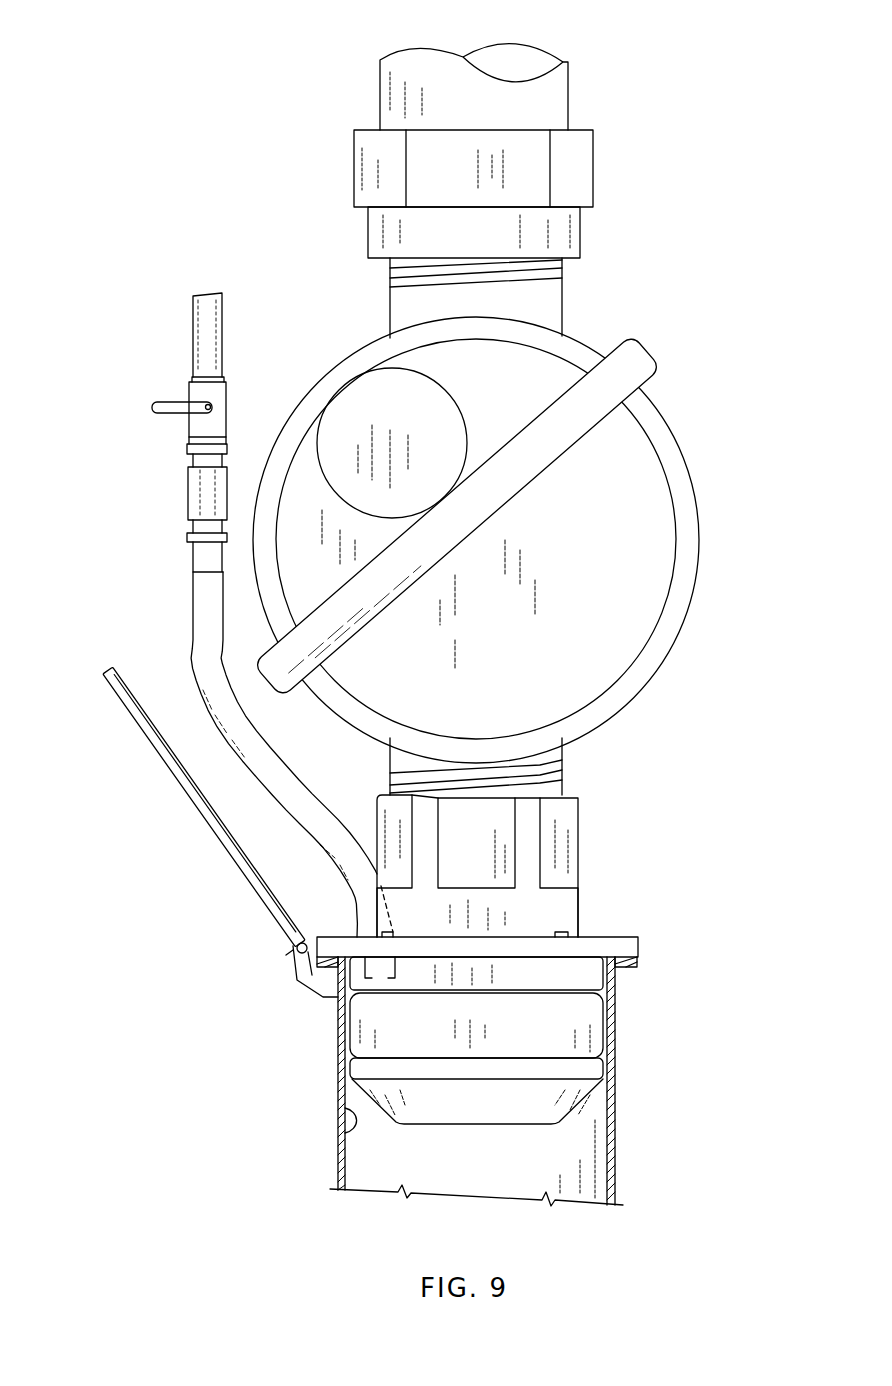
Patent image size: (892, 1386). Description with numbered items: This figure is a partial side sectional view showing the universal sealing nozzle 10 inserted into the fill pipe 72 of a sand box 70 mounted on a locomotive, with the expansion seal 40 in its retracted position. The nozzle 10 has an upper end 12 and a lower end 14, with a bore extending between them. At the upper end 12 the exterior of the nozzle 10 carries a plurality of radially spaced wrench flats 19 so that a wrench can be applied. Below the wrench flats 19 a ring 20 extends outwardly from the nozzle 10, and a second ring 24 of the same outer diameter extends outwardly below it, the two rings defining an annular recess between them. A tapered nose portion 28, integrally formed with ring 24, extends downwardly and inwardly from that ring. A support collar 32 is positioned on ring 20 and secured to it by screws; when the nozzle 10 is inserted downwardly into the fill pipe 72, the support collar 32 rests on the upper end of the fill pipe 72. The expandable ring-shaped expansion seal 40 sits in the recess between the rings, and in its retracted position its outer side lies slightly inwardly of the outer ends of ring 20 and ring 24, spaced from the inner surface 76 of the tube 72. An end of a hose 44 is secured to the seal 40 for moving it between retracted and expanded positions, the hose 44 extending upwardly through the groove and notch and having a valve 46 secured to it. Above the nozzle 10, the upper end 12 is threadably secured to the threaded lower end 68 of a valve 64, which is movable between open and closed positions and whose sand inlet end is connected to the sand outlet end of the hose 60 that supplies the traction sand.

The nozzle 10 is at (622, 887).
The upper end 12 is at (570, 783).
The lower end 14 is at (533, 1137).
The wrench flats 19 is at (567, 828).
The ring 20 is at (585, 975).
The ring 24 is at (585, 1068).
The tapered nose portion 28 is at (590, 1102).
The support collar 32 is at (642, 926).
The expansion seal 40 is at (598, 1017).
The hose 44 is at (207, 592).
The valve 46 is at (174, 366).
The hose 60 is at (548, 84).
The valve 64 is at (728, 474).
The threaded lower end 68 is at (528, 778).
The sand box 70 is at (296, 1204).
The fill pipe 72 is at (326, 1063).
The inner surface 76 is at (346, 1130).